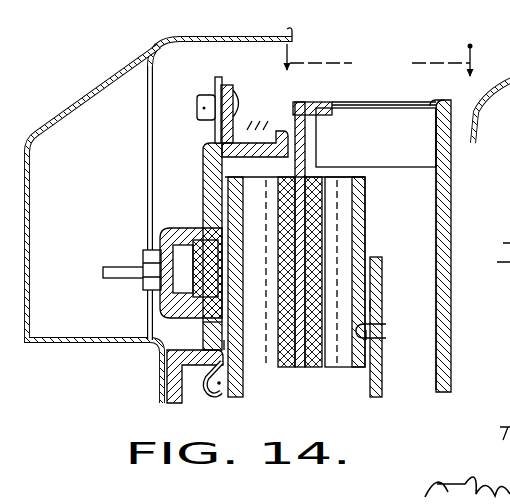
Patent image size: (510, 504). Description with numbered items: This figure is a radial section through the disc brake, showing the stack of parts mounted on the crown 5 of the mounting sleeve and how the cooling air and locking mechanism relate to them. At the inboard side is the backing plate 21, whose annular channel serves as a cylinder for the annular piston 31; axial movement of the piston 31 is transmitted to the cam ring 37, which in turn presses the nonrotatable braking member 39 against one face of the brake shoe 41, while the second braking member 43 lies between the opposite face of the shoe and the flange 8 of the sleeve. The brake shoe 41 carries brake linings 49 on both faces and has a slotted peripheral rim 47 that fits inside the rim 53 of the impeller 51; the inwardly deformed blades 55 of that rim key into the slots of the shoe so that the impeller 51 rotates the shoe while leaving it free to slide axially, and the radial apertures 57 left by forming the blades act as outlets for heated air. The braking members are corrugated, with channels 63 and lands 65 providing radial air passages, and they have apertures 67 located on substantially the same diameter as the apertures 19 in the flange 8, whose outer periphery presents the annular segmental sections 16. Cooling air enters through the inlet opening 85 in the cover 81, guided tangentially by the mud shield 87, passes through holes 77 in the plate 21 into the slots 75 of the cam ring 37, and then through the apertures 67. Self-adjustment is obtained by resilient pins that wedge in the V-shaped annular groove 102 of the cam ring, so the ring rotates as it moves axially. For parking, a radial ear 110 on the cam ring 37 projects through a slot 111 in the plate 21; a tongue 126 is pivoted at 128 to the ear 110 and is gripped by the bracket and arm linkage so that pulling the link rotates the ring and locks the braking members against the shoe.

The cover 81 is at (194, 36).
The inlet opening 85 is at (134, 72).
The mud shield 87 is at (30, 270).
The housing or backing plate 21 is at (203, 180).
The annular expander tube or piston 31 is at (190, 235).
The pressure plate or cam ring 37 is at (212, 143).
The slots 75 is at (218, 323).
The radial ear 110 is at (215, 80).
The tongue 126 is at (233, 86).
The pivot 128 is at (242, 104).
The slot 111 is at (230, 146).
The disc-like braking member 39 is at (243, 397).
The ridges or lands 65 is at (238, 268).
The disc-type brake shoe 41 is at (301, 369).
The brake linings 49 is at (283, 369).
The disc-like braking member 43 is at (351, 370).
The channels 63 is at (341, 243).
The flange 8 is at (378, 286).
The crown 5 is at (375, 306).
The longitudinal apertures 19 is at (378, 333).
The apertures 67 is at (226, 342).
The holes 77 is at (220, 331).
The V-shaped annular groove 102 is at (217, 388).
The peripheral rim or flange 47 is at (312, 106).
The peripheral rim 53 is at (372, 102).
The radial apertures 57 is at (432, 102).
The blades 55 is at (451, 157).
The impeller 51 is at (454, 192).
The annular segmental sections 16 is at (395, 61).